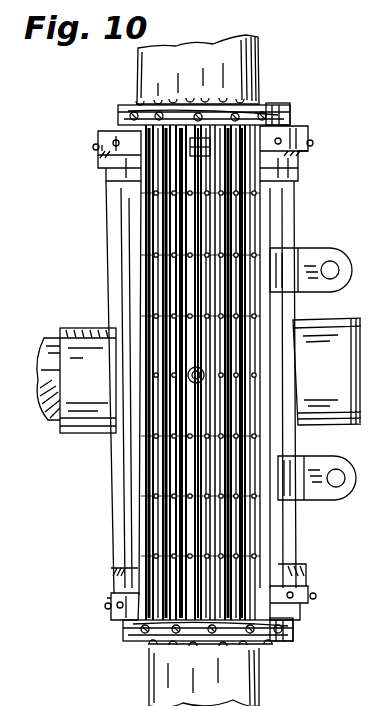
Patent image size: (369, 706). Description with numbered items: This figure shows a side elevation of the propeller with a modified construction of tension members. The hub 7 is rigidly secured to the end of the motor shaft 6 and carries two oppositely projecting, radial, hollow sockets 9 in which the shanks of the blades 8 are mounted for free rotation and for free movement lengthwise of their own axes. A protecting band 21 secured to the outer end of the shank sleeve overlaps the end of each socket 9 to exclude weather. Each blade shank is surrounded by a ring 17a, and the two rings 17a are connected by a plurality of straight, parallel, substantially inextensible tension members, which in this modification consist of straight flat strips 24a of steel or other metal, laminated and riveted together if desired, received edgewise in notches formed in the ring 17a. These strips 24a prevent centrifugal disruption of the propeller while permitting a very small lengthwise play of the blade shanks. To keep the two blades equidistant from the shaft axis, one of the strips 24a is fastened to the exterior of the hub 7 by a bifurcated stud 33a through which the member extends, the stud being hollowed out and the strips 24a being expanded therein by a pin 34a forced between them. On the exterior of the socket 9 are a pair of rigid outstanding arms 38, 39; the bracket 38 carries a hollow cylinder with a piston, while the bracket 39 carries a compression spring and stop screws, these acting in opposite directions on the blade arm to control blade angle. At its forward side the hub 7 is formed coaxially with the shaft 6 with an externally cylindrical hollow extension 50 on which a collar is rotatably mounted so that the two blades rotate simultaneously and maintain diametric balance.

The blade 8 is at (249, 54).
The ring 17a is at (268, 98).
The protecting band 21 is at (293, 131).
The socket 9 is at (98, 208).
The tension member strip 24a is at (141, 229).
The bifurcated stud 33a is at (181, 363).
The pin 34a is at (184, 372).
The hub 7 is at (82, 320).
The motor shaft 6 is at (40, 329).
The hollow extension 50 is at (327, 371).
The arm 39 is at (305, 242).
The arm 38 is at (306, 485).